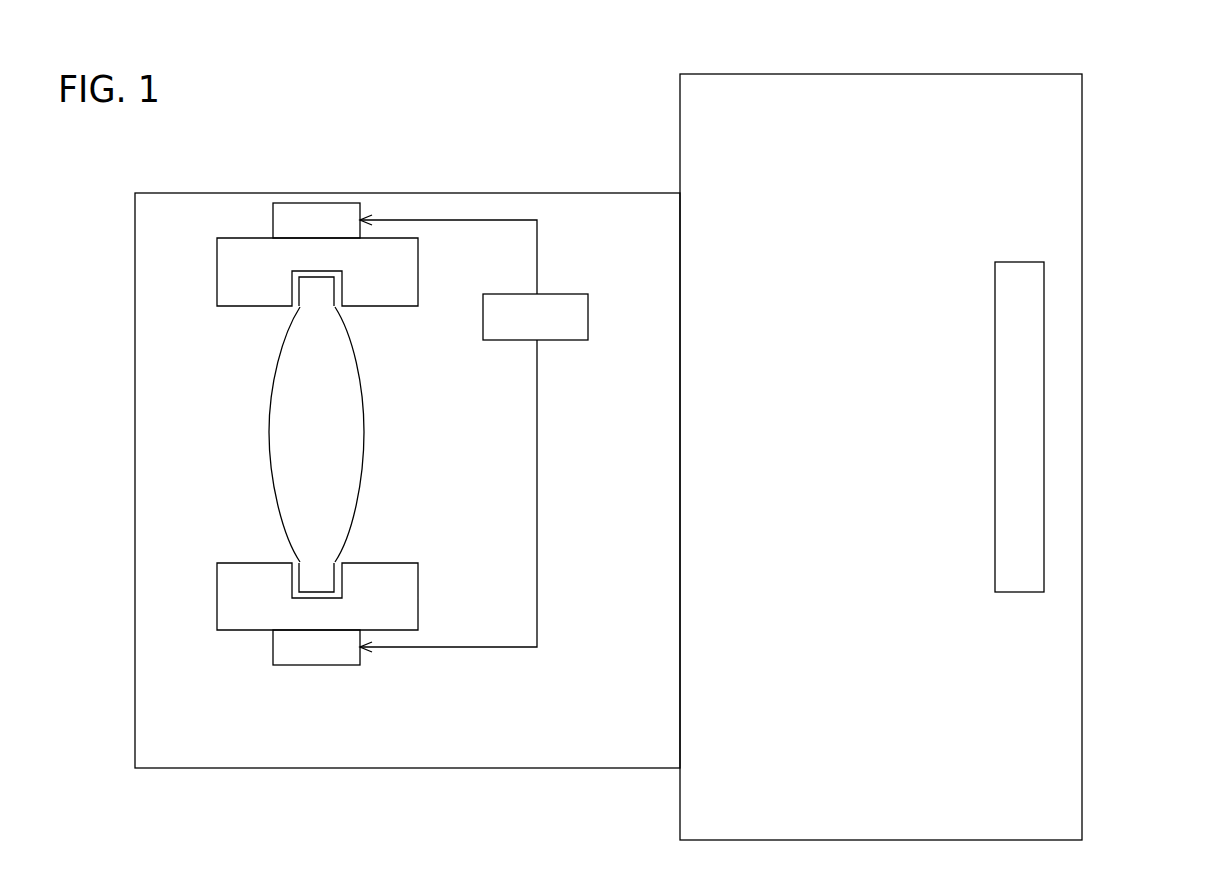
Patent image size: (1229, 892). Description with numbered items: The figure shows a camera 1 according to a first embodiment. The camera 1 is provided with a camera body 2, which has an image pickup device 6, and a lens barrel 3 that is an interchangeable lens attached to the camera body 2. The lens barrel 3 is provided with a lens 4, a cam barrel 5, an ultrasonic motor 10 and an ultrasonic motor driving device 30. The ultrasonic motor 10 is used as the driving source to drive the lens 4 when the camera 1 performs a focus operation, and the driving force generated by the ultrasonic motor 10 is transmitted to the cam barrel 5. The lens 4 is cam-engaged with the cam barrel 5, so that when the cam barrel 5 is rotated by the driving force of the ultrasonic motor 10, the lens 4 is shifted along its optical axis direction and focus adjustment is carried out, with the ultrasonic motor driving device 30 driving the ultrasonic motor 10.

The camera 1 is at (1136, 93).
The camera body 2 is at (1072, 170).
The lens barrel 3 is at (568, 213).
The lens 4 is at (350, 478).
The cam barrel 5 is at (408, 285).
The image pickup device 6 is at (1012, 556).
The ultrasonic motor 10 is at (321, 211).
The ultrasonic motor driving device 30 is at (574, 315).